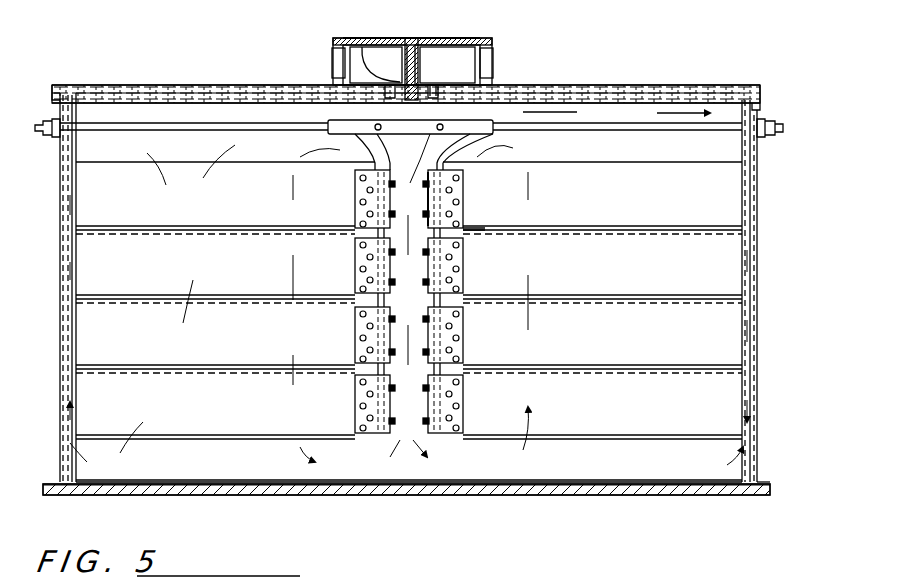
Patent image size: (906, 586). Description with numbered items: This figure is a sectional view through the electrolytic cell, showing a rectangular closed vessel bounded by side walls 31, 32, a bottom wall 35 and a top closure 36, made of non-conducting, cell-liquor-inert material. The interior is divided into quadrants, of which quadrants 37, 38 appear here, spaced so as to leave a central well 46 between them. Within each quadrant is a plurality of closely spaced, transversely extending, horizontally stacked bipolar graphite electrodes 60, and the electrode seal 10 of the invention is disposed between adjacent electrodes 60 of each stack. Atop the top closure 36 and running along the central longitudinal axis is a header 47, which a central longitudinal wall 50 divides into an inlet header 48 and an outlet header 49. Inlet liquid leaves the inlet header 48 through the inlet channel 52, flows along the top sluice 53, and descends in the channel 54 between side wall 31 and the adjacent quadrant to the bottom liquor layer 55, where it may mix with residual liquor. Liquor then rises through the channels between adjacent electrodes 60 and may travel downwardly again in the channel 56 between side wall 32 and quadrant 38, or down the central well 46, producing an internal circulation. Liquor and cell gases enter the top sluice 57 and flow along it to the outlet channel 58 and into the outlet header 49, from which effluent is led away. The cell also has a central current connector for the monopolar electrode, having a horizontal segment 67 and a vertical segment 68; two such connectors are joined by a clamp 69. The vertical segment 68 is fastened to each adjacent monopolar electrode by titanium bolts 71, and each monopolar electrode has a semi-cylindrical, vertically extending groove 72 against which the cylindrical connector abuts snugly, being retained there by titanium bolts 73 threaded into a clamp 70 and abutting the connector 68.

The electrode seal 10 is at (605, 204).
The side wall 31 is at (757, 193).
The side wall 32 is at (62, 265).
The bottom wall 35 is at (582, 500).
The top closure 36 is at (632, 91).
The quadrant 37 is at (653, 276).
The quadrant 38 is at (153, 276).
The central well 46 is at (427, 346).
The header 47 is at (423, 38).
The inlet header 48 is at (493, 62).
The outlet header 49 is at (355, 57).
The central longitudinal wall 50 is at (410, 75).
The inlet channel 52 is at (434, 88).
The top sluice 53 is at (585, 97).
The channel 54 is at (750, 405).
The bottom liquor layer 55 is at (637, 490).
The channel 56 is at (68, 342).
The top sluice 57 is at (213, 97).
The outlet channel 58 is at (362, 40).
The bipolar graphite electrode 60 is at (728, 218).
The horizontal segment 67 is at (592, 126).
The vertical segment 68 is at (443, 230).
The clamp 69 is at (487, 125).
The clamp 70 is at (757, 110).
The bolt 71 is at (457, 177).
The groove 72 is at (433, 176).
The bolt 73 is at (428, 185).